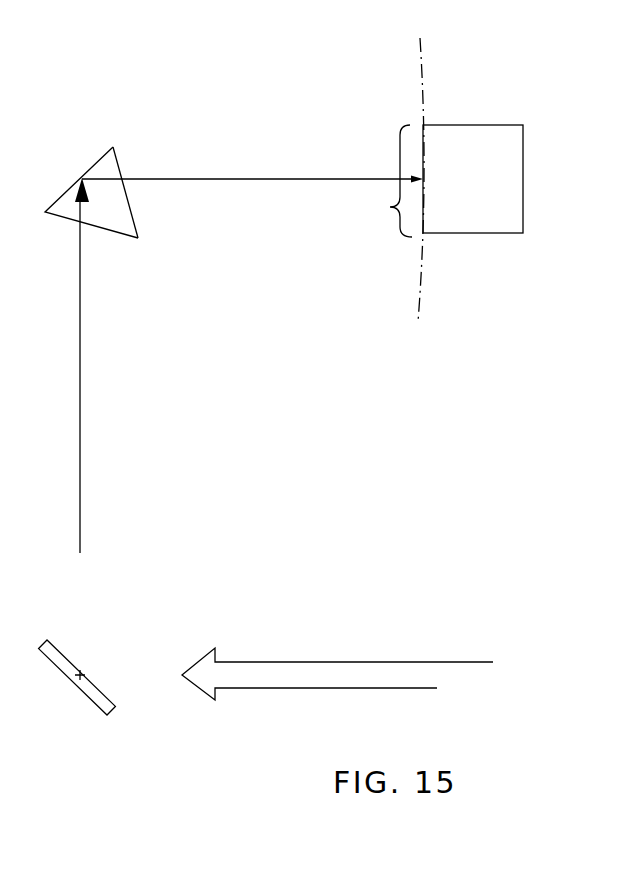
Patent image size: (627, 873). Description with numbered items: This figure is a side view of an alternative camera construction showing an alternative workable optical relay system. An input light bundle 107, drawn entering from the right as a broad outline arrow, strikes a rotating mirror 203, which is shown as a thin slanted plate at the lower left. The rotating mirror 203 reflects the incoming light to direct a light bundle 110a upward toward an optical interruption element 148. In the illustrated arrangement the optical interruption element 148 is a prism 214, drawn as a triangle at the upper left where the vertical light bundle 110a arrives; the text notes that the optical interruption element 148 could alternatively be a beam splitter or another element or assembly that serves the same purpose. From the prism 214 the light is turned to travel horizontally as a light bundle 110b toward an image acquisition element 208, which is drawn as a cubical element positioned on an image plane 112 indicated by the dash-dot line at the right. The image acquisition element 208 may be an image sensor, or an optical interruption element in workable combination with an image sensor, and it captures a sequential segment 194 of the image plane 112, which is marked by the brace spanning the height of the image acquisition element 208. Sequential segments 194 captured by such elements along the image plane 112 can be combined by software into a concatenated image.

The optical interruption element 148 is at (90, 132).
The prism 214 is at (110, 165).
The light bundle 110a is at (80, 443).
The light bundle 110b is at (252, 180).
The image plane 112 is at (422, 72).
The image acquisition element 208 is at (512, 152).
The sequential segment 194 is at (389, 207).
The rotating mirror 203 is at (105, 698).
The input light bundle 107 is at (347, 678).